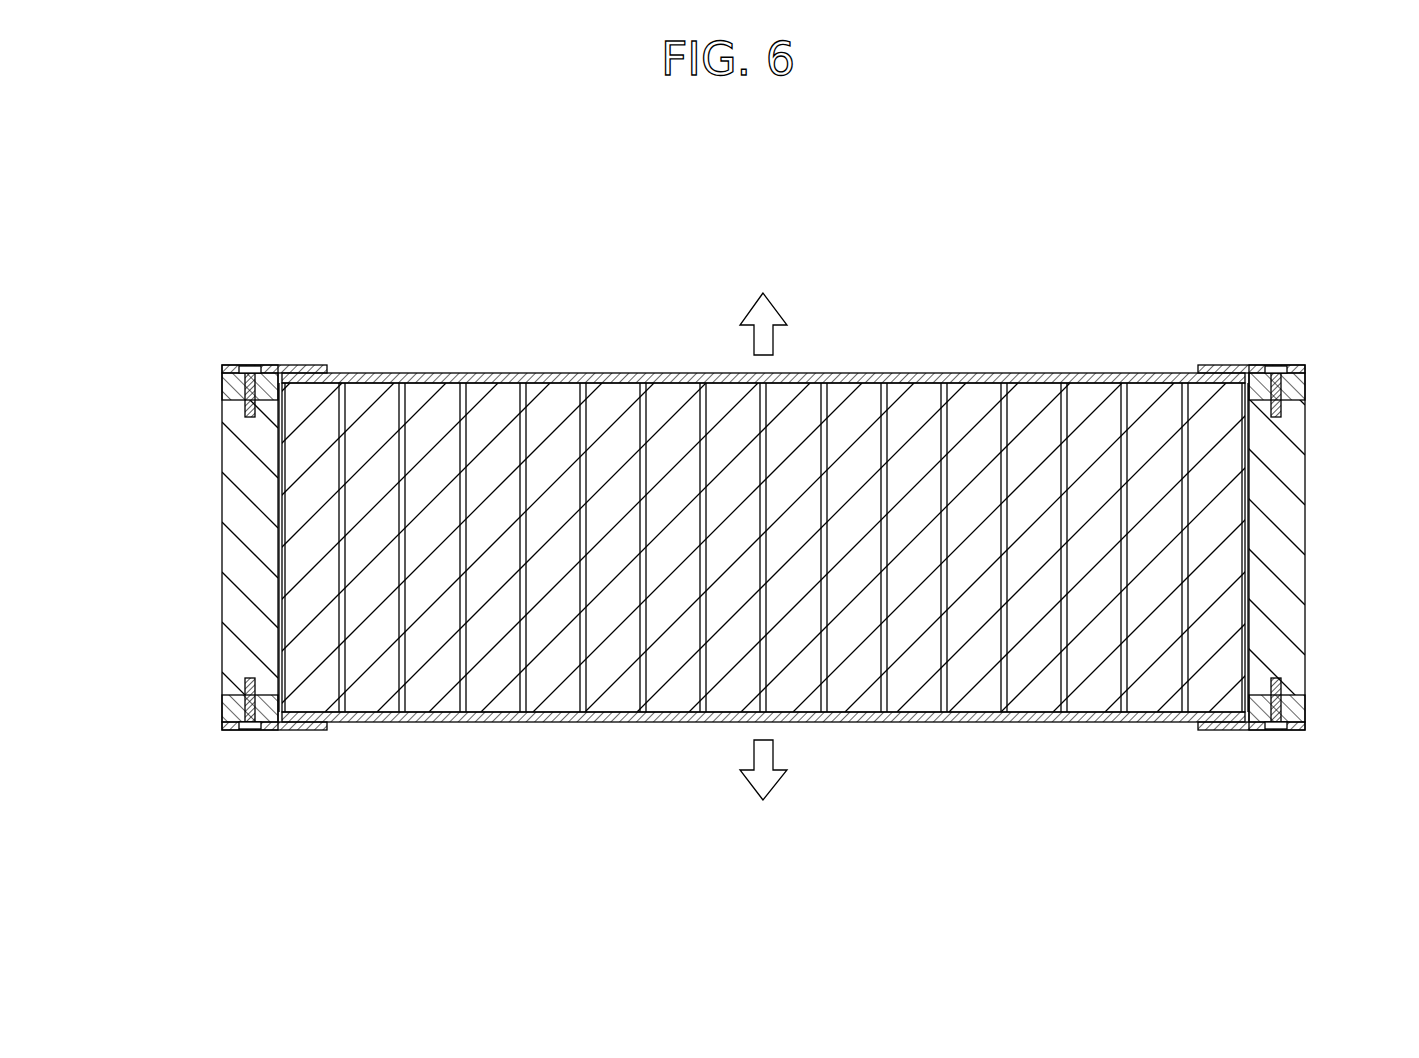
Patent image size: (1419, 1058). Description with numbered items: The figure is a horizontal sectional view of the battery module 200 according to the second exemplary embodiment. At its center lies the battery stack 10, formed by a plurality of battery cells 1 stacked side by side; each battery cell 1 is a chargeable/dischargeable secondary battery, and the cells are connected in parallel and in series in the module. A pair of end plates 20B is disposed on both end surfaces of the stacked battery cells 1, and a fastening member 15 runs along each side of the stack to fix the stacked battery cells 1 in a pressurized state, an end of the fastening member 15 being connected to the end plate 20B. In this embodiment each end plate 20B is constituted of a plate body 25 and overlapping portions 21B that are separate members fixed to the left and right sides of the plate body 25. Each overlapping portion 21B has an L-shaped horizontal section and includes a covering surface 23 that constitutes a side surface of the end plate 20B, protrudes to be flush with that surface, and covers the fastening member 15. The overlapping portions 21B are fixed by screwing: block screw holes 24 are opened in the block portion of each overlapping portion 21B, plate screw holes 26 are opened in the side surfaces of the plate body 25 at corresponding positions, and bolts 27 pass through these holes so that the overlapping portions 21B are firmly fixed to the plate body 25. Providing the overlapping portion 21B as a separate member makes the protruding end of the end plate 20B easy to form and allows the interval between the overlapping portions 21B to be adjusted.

The battery module 200 is at (1047, 232).
The battery stack 10 is at (709, 646).
The battery cell 1 is at (1128, 848).
The fastening member 15 is at (562, 373).
The end plate 20B is at (767, 548).
The plate body 25 is at (240, 555).
The block screw hole 24 is at (222, 382).
The overlapping portion 21B is at (763, 548).
The covering surface 23 is at (268, 365).
The plate screw hole 26 is at (248, 412).
The bolt 27 is at (243, 365).